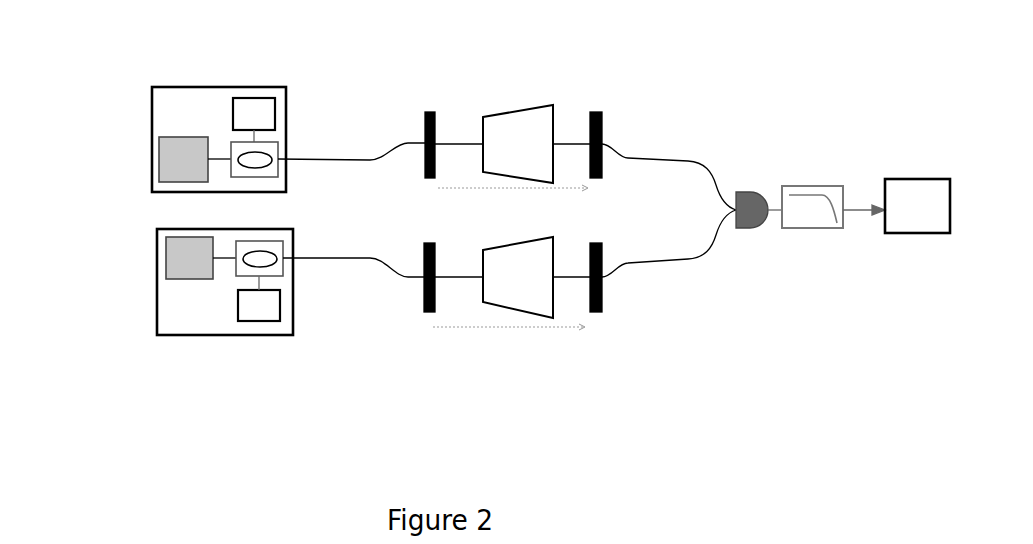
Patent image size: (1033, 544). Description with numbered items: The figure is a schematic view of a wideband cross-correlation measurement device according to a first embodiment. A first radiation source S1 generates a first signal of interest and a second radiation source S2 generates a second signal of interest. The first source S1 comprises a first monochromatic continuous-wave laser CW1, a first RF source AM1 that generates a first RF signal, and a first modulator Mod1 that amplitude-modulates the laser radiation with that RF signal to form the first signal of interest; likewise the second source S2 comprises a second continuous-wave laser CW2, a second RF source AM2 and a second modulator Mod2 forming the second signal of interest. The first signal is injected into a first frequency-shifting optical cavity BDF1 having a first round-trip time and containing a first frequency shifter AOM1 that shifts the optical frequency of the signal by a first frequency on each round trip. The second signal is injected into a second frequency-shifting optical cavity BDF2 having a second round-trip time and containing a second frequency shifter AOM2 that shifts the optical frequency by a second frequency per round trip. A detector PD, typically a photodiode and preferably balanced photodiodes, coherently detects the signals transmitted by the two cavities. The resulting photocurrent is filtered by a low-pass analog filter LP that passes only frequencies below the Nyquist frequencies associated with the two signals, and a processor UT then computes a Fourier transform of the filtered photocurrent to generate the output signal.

The first radiation source S1 is at (218, 87).
The first monochromatic continuous-wave laser CW1 is at (152, 163).
The first RF source AM1 is at (253, 98).
The first modulator Mod1 is at (285, 156).
The second radiation source S2 is at (157, 283).
The second monochromatic continuous-wave laser CW2 is at (186, 279).
The second RF source AM2 is at (262, 321).
The second modulator Mod2 is at (292, 262).
The first frequency-shifting optical cavity BDF1 is at (458, 88).
The first frequency shifter AOM1 is at (521, 114).
The second frequency-shifting optical cavity BDF2 is at (451, 343).
The second frequency shifter AOM2 is at (527, 228).
The detector PD is at (752, 192).
The low-pass analog filter LP is at (818, 186).
The processor UT is at (916, 179).